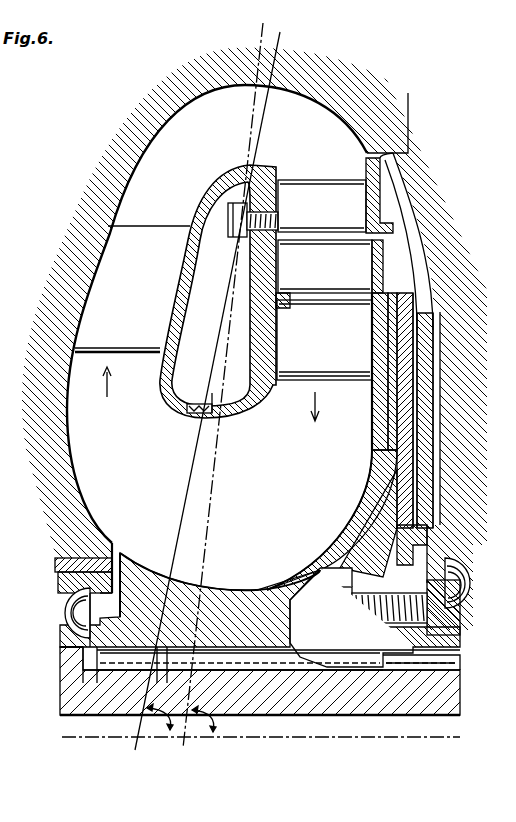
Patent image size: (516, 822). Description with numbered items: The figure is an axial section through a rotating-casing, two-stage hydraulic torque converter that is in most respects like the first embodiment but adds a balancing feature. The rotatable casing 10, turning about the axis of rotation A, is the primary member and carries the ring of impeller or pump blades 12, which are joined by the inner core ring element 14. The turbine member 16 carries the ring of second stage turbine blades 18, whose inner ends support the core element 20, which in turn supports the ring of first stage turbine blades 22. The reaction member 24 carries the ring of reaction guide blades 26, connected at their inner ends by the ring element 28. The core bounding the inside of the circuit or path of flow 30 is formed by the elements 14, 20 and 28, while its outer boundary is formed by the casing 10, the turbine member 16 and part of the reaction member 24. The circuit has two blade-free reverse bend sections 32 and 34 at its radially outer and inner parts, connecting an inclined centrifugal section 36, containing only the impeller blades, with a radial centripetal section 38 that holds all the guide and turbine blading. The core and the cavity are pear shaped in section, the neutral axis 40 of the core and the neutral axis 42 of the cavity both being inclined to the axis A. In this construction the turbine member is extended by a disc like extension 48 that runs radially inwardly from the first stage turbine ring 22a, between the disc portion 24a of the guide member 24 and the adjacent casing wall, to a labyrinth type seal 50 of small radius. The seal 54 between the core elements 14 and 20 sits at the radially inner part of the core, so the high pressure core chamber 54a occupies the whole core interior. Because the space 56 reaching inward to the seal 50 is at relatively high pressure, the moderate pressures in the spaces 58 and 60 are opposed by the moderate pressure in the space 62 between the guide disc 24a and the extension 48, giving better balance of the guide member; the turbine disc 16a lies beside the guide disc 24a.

The rotatable casing 10 is at (112, 133).
The impeller or pump blades 12 is at (131, 303).
The inner core ring element 14 is at (170, 382).
The turbine member 16 is at (405, 703).
The turbine disc 16a is at (377, 450).
The second stage turbine blades 18 is at (336, 351).
The core element 20 is at (260, 400).
The first stage turbine blades 22 is at (331, 215).
The first stage turbine ring 22a is at (377, 193).
The reaction member 24 is at (357, 562).
The disc portion of the guide member 24a is at (400, 377).
The reaction guide blades 26 is at (332, 275).
The ring element 28 is at (267, 277).
The circuit or path of flow 30 is at (256, 463).
The radially outer reverse bend section 32 is at (297, 112).
The radially inner reverse bend section 34 is at (252, 575).
The centrifugal section 36 is at (83, 370).
The centripetal section 38 is at (246, 393).
The neutral axis of the core 40 is at (210, 510).
The neutral axis of the cavity 42 is at (190, 485).
The disc like extension 48 is at (423, 327).
The labyrinth type seal 50 is at (407, 533).
The seal 54 is at (200, 410).
The high pressure core chamber 54a is at (205, 325).
The space 56 is at (433, 358).
The space 58 is at (291, 313).
The space 60 is at (393, 431).
The space 62 is at (417, 413).
The axis of rotation A is at (349, 738).